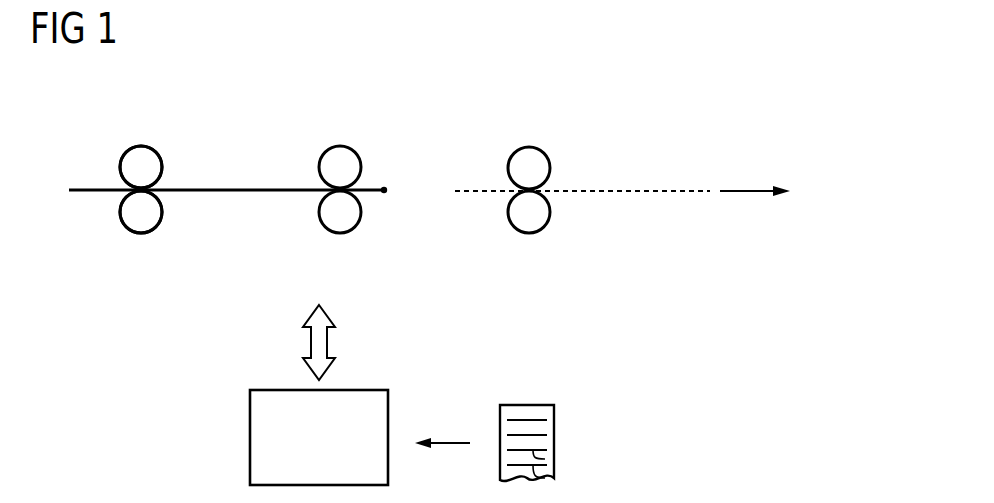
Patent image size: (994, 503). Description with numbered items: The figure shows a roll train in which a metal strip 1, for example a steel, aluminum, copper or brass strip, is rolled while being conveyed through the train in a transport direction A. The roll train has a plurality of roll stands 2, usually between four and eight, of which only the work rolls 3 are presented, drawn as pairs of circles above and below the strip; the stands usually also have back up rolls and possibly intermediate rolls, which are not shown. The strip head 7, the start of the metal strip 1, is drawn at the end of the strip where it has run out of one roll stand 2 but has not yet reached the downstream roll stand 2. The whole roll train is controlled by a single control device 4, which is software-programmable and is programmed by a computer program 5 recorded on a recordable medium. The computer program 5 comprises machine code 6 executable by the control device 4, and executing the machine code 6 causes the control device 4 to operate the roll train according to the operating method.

The metal strip 1 is at (220, 188).
The roll stand 2 is at (145, 115).
The work rolls 3 is at (120, 165).
The control device 4 is at (250, 438).
The computer program 5 is at (554, 428).
The machine code 6 is at (545, 459).
The strip head 7 is at (386, 186).
The transport direction A is at (738, 190).